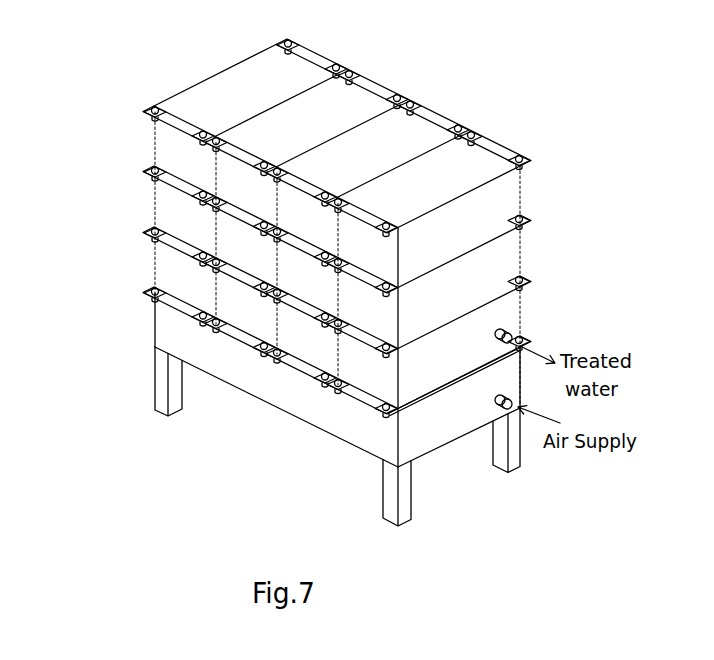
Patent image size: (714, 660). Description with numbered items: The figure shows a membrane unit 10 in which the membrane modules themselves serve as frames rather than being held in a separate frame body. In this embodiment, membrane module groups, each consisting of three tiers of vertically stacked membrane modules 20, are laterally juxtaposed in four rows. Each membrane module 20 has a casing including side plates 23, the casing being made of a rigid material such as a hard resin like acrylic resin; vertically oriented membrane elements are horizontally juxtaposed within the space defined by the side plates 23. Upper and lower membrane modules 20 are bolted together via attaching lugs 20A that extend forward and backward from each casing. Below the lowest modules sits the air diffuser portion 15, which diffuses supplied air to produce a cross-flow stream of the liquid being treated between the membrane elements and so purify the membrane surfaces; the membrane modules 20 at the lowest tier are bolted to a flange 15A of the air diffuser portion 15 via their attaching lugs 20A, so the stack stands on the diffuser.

The membrane unit 10 is at (281, 264).
The membrane module 20 is at (182, 278).
The attaching lug 20A is at (197, 322).
The air diffuser portion 15 is at (260, 383).
The flange 15A is at (357, 397).
The side plate 23 is at (425, 372).